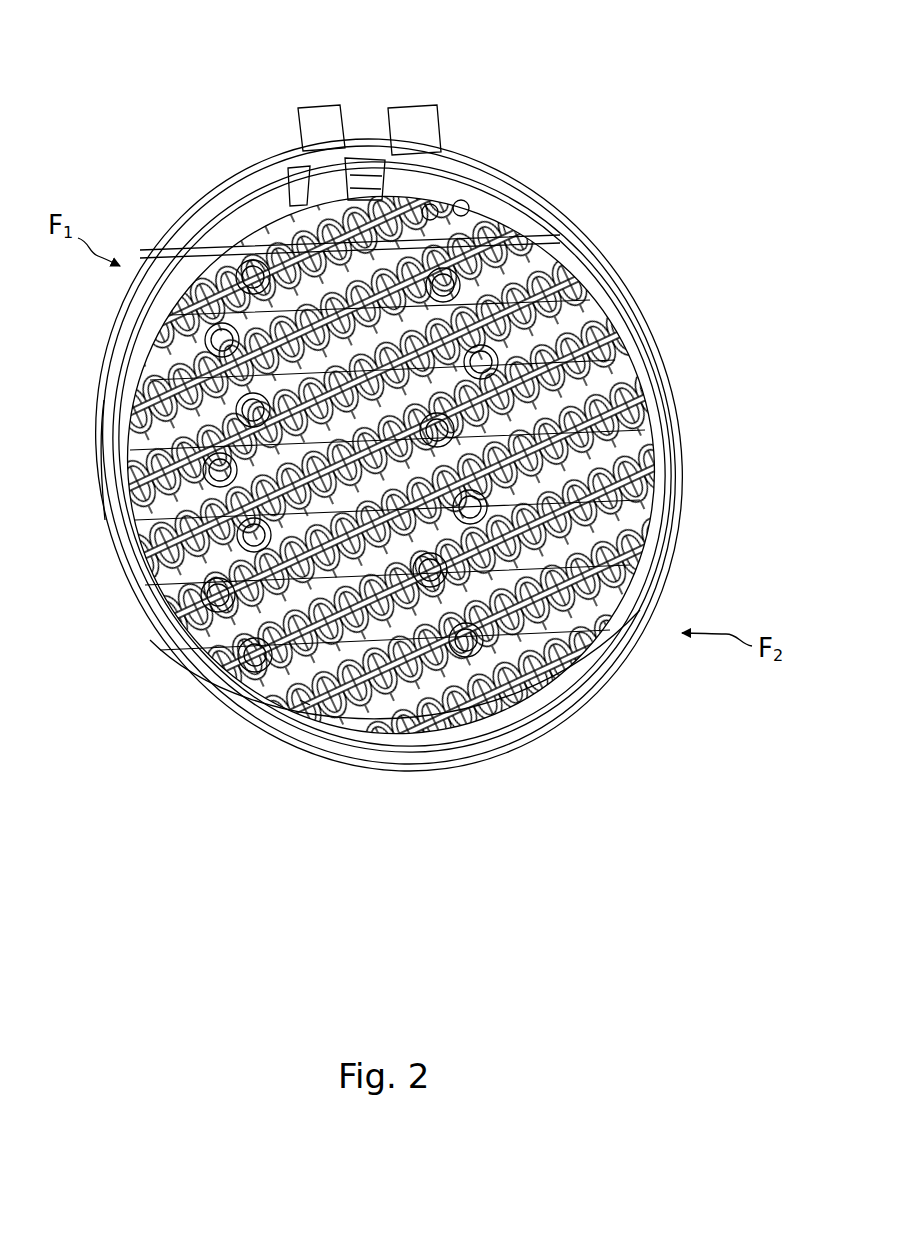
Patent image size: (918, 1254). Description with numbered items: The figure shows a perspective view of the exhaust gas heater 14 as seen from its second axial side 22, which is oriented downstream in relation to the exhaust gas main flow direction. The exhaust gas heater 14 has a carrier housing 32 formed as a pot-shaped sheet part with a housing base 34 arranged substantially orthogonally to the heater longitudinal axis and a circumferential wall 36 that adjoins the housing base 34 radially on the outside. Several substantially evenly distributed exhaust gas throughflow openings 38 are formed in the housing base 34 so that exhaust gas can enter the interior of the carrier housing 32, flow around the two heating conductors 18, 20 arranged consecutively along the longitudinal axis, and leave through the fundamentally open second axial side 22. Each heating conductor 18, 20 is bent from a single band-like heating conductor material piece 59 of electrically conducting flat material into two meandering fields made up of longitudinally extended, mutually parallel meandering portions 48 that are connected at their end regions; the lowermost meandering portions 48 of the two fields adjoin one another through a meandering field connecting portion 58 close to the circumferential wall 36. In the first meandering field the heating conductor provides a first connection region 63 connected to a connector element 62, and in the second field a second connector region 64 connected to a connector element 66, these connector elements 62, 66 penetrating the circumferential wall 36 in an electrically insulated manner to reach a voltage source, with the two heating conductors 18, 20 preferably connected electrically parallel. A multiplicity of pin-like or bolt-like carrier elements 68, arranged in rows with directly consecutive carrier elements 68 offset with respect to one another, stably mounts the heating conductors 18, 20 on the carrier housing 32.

The exhaust gas heater 14 is at (675, 77).
The heating conductor 18 is at (555, 298).
The heating conductor 20 is at (235, 232).
The second axial side 22 is at (150, 776).
The carrier housing 32 is at (678, 392).
The housing base 34 is at (485, 220).
The circumferential wall 36 is at (680, 545).
The exhaust gas throughflow openings 38 is at (468, 205).
The meandering portions 48 is at (605, 368).
The meandering field connecting portion 58 is at (349, 712).
The heating conductor material piece 59 is at (122, 452).
The connector element 62 is at (313, 108).
The first connection region 63 is at (295, 200).
The second connector region 64 is at (440, 206).
The connector element 66 is at (412, 107).
The carrier elements 68 is at (245, 640).